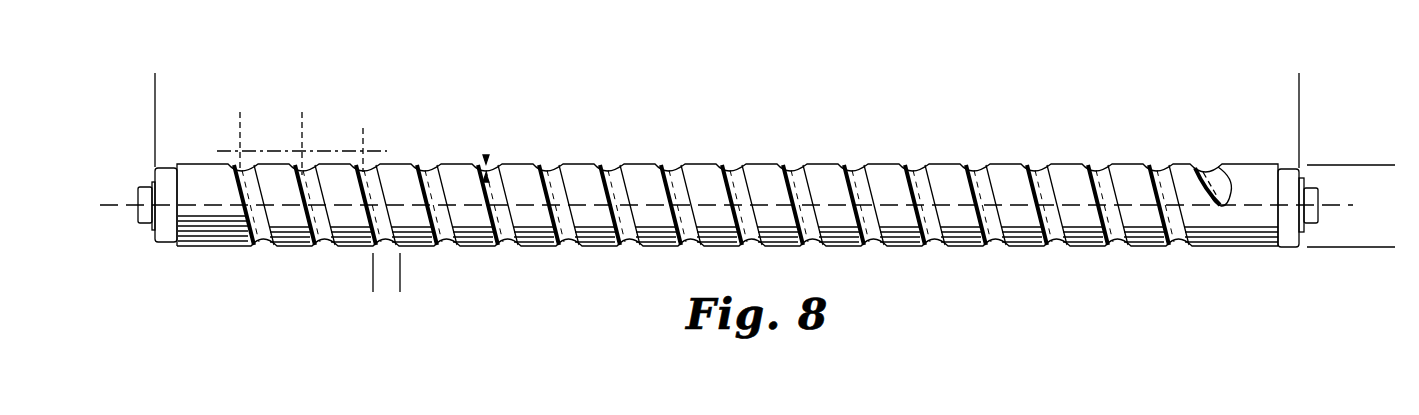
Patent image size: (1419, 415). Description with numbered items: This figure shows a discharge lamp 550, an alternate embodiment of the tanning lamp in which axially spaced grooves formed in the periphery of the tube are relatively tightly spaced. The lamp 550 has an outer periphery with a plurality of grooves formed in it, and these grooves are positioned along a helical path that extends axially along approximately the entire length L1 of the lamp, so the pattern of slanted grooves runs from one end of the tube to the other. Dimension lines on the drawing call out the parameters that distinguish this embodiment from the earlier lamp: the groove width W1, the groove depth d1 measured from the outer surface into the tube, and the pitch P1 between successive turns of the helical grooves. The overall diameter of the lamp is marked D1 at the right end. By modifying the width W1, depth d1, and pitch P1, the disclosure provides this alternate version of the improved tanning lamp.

The discharge lamp 550 is at (1030, 71).
The length of the lamp L1 is at (1299, 82).
The pitch P1 is at (302, 109).
The groove width W1 is at (358, 283).
The groove depth d1 is at (486, 138).
The shaft diameter D1 is at (1386, 166).